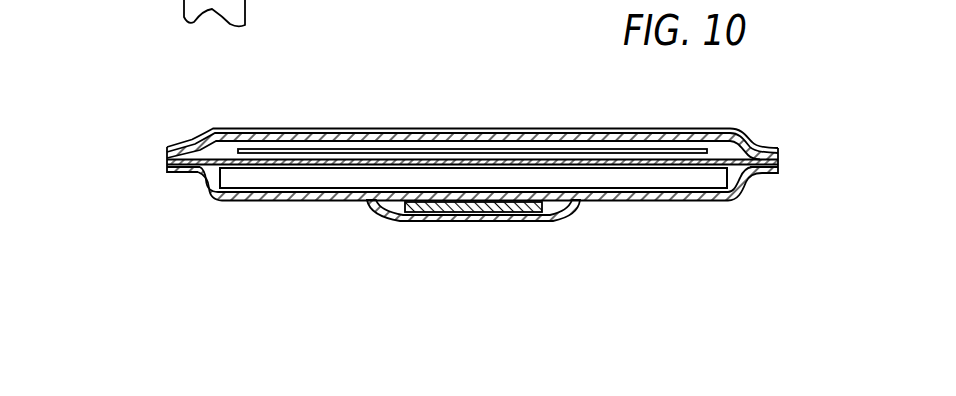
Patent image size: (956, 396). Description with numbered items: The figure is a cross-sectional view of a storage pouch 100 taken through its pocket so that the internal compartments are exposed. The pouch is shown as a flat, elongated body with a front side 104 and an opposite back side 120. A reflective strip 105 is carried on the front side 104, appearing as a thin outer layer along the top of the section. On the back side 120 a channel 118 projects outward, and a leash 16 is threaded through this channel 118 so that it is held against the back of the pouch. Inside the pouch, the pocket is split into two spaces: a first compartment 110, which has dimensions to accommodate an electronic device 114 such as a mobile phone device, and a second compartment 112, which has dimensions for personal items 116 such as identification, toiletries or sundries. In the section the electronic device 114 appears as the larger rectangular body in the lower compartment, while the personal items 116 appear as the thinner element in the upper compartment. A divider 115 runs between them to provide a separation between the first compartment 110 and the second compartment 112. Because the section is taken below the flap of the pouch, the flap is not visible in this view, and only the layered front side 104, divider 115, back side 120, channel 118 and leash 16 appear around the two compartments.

The storage pouch 100 is at (147, 100).
The front side 104 is at (500, 136).
The reflective strip 105 is at (421, 128).
The first compartment 110 is at (212, 174).
The second compartment 112 is at (222, 152).
The electronic device 114 is at (280, 178).
The divider 115 is at (345, 163).
The personal items 116 is at (286, 152).
The channel 118 is at (565, 214).
The back side 120 is at (326, 200).
The leash 16 is at (473, 208).